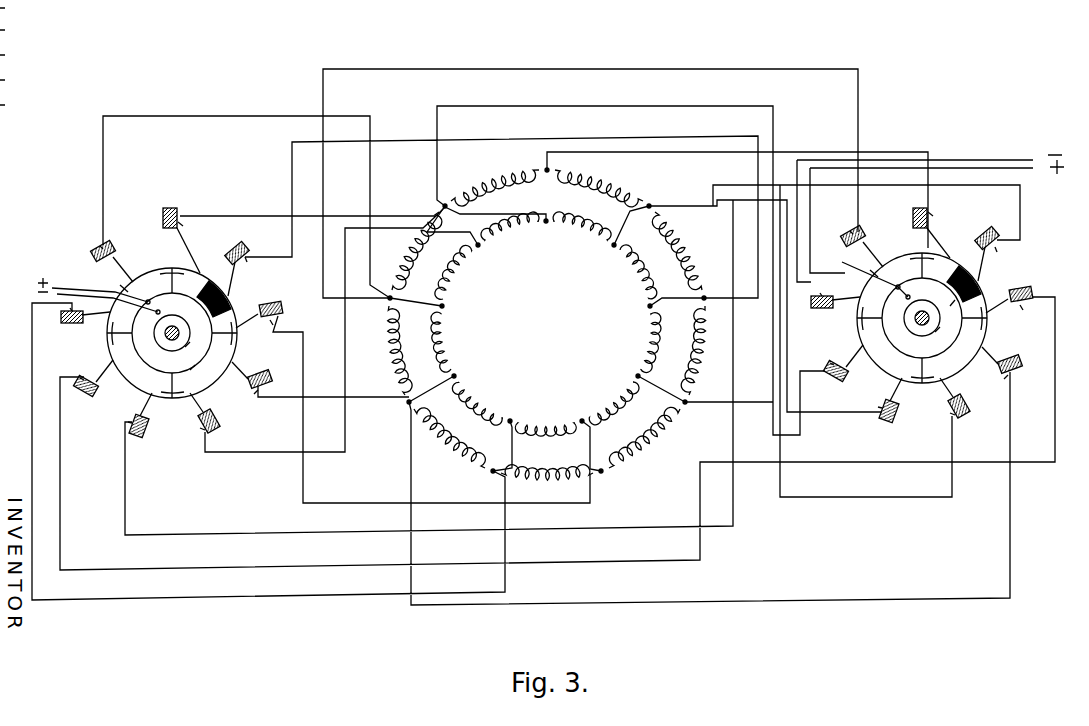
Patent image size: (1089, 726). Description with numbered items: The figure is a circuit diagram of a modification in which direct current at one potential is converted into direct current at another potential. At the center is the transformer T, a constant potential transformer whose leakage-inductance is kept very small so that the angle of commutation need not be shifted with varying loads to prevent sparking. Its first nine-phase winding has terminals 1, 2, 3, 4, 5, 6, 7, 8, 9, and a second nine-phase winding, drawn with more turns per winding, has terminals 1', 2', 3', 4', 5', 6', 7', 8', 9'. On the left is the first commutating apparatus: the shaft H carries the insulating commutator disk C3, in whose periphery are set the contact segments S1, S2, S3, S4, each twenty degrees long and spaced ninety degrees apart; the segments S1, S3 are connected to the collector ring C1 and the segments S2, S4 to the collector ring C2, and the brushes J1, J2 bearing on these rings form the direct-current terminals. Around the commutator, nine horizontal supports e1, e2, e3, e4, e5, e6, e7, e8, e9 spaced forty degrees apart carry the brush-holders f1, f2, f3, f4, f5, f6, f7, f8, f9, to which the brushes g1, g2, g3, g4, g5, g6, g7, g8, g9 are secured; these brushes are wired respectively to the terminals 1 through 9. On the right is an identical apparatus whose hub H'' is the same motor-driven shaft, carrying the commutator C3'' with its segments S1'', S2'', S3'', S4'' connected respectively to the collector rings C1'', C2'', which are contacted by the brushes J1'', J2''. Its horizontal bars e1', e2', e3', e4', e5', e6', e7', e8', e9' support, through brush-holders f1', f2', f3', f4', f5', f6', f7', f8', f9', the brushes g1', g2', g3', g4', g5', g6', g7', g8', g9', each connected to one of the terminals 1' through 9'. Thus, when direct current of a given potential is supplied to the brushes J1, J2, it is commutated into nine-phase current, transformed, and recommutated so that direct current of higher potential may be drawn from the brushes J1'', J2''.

The transformer T is at (547, 325).
The 9-phase terminal 1 is at (543, 230).
The 9-phase terminal 2 is at (607, 254).
The 9-phase terminal 3 is at (643, 307).
The 9-phase terminal 4 is at (632, 373).
The 9-phase terminal 5 is at (585, 412).
The 9-phase terminal 6 is at (516, 414).
The 9-phase terminal 7 is at (462, 372).
The 9-phase terminal 8 is at (449, 312).
The 9-phase terminal 9 is at (478, 255).
The terminal of second polyphase winding 1' is at (543, 179).
The terminal of second polyphase winding 2' is at (647, 192).
The terminal of second polyphase winding 3' is at (687, 290).
The terminal of second polyphase winding 4' is at (678, 385).
The terminal of second polyphase winding 5' is at (604, 458).
The terminal of second polyphase winding 6' is at (493, 458).
The terminal of second polyphase winding 7' is at (422, 398).
The terminal of second polyphase winding 8' is at (401, 308).
The terminal of second polyphase winding 9' is at (427, 198).
The shaft H is at (164, 343).
The contact segment S1 is at (157, 273).
The contact segment S2 is at (220, 344).
The contact segment S3 is at (163, 385).
The contact segment S4 is at (119, 342).
The collector ring C1 is at (189, 376).
The collector ring C2 is at (188, 350).
The commutator disk C3 is at (112, 282).
The brush J1 is at (145, 292).
The brush J2 is at (163, 307).
The horizontal support e1 is at (159, 218).
The horizontal support e2 is at (145, 429).
The horizontal support e3 is at (229, 247).
The horizontal support e4 is at (88, 389).
The horizontal support e5 is at (266, 301).
The horizontal support e6 is at (70, 327).
The horizontal support e7 is at (260, 371).
The horizontal support e8 is at (93, 257).
The horizontal support e9 is at (213, 421).
The brush-holder f1 is at (186, 231).
The brush-holder f2 is at (107, 425).
The brush-holder f3 is at (244, 267).
The brush-holder f4 is at (67, 367).
The brush-holder f5 is at (262, 332).
The brush-holder f6 is at (55, 320).
The brush-holder f7 is at (250, 405).
The brush-holder f8 is at (96, 241).
The brush-holder f9 is at (186, 427).
The brush g1 is at (192, 250).
The brush g2 is at (131, 404).
The brush g3 is at (238, 279).
The brush g4 is at (94, 364).
The brush g5 is at (247, 337).
The brush g6 is at (95, 322).
The brush g7 is at (230, 381).
The brush g8 is at (117, 251).
The brush g9 is at (181, 406).
The hub H'' is at (914, 330).
The segment S1'' is at (913, 256).
The segment S2'' is at (971, 328).
The segment S3'' is at (927, 370).
The segment S4'' is at (870, 328).
The collector ring C1'' is at (964, 300).
The collector ring C2'' is at (938, 335).
The commutator C3'' is at (861, 266).
The brush J1'' is at (904, 277).
The brush J2'' is at (916, 292).
The horizontal bar e1' is at (911, 209).
The horizontal bar e2' is at (895, 414).
The horizontal bar e3' is at (984, 228).
The horizontal bar e4' is at (835, 377).
The horizontal bar e5' is at (1027, 282).
The horizontal bar e6' is at (822, 313).
The horizontal bar e7' is at (1017, 354).
The horizontal bar e8' is at (843, 242).
The horizontal bar e9' is at (966, 406).
The brush holder f1' is at (939, 215).
The brush holder f2' is at (870, 426).
The brush holder f3' is at (997, 257).
The brush holder f4' is at (821, 352).
The brush holder f5' is at (1020, 317).
The brush holder f6' is at (834, 288).
The brush holder f7' is at (1018, 389).
The brush holder f8' is at (845, 224).
The brush holder f9' is at (938, 418).
The brush g1' is at (944, 243).
The brush g2' is at (876, 389).
The brush g3' is at (992, 270).
The brush g4' is at (845, 349).
The brush g5' is at (997, 323).
The brush g6' is at (846, 307).
The brush g7' is at (980, 367).
The brush g8' is at (876, 244).
The brush g9' is at (929, 391).